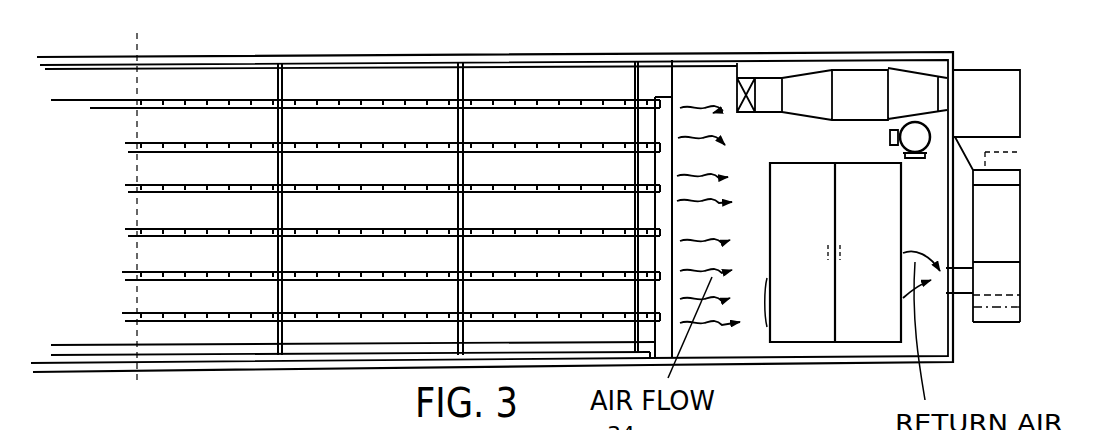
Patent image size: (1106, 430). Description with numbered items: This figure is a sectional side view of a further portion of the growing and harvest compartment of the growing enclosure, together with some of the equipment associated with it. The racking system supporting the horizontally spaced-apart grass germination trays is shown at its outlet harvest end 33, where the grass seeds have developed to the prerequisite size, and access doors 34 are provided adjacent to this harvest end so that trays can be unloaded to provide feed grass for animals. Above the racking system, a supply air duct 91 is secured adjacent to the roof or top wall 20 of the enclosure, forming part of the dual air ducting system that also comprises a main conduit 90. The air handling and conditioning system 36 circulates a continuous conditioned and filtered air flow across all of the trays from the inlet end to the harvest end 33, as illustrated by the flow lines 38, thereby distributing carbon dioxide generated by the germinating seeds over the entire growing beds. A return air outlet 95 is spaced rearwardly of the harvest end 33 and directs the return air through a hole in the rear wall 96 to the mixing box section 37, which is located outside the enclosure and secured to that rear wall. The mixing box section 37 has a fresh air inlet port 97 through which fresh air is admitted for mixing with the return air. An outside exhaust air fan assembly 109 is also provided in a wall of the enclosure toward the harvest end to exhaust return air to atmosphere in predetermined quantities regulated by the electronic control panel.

The roof 20 is at (385, 55).
The supply air duct 91 is at (548, 80).
The outlet harvest end 33 is at (687, 123).
The flow lines 38 is at (700, 170).
The main conduit 90 is at (811, 90).
The outside exhaust air fan assembly 109 is at (835, 252).
The access doors 34 is at (815, 307).
The air handling and conditioning system 36 is at (1007, 102).
The mixing box section 37 is at (1000, 210).
The fresh air inlet port 97 is at (1005, 322).
The rear wall 96 is at (955, 239).
The return air outlet 95 is at (946, 283).